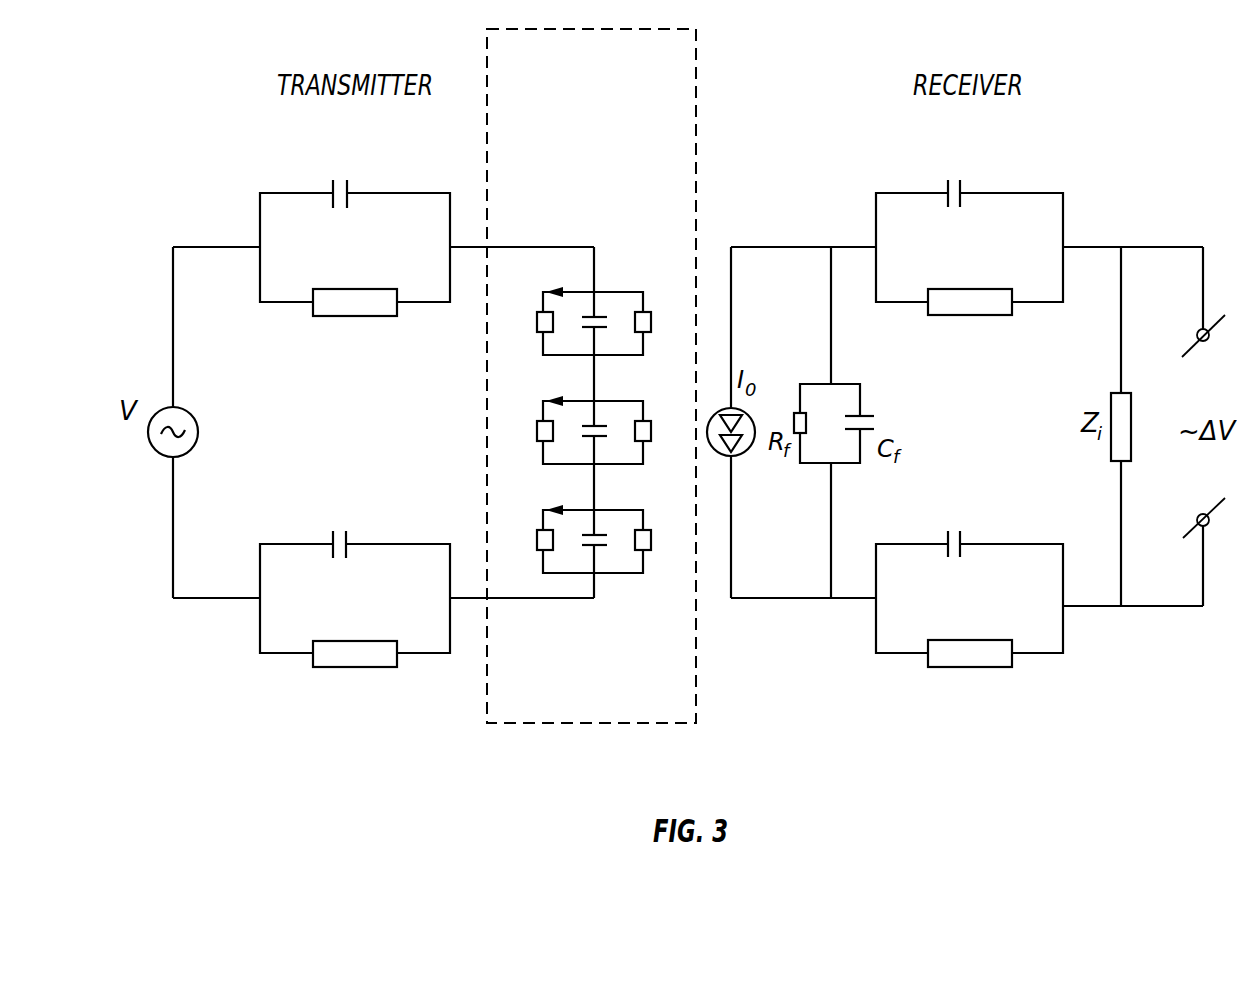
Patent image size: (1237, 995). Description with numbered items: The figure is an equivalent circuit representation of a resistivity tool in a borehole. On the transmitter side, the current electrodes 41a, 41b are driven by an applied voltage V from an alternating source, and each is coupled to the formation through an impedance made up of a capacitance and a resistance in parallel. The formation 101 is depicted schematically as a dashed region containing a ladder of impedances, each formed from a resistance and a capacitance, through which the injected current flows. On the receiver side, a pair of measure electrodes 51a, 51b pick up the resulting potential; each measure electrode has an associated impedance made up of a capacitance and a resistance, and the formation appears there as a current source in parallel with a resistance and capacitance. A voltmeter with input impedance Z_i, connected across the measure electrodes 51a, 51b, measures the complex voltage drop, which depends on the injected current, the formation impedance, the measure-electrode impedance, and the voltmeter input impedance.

The formation 101 is at (665, 29).
The current electrode 41a is at (198, 247).
The current electrode 41b is at (198, 598).
The measure electrode 51a is at (1097, 247).
The measure electrode 51b is at (1097, 606).